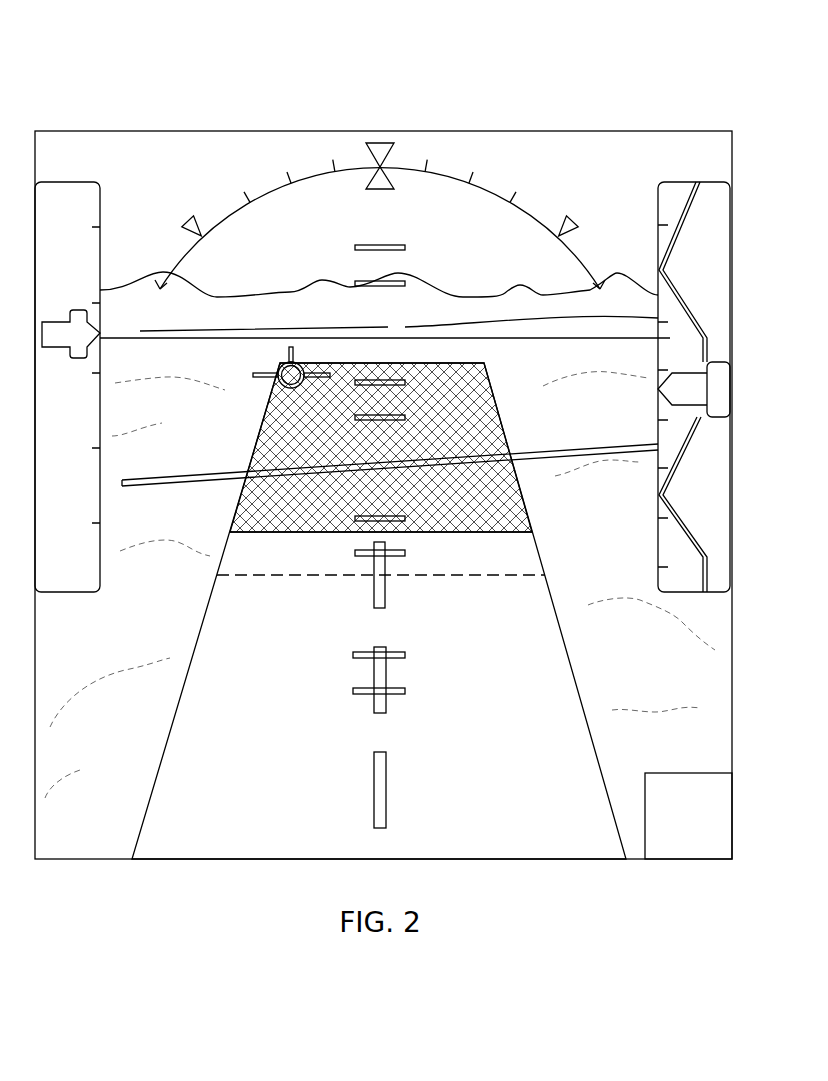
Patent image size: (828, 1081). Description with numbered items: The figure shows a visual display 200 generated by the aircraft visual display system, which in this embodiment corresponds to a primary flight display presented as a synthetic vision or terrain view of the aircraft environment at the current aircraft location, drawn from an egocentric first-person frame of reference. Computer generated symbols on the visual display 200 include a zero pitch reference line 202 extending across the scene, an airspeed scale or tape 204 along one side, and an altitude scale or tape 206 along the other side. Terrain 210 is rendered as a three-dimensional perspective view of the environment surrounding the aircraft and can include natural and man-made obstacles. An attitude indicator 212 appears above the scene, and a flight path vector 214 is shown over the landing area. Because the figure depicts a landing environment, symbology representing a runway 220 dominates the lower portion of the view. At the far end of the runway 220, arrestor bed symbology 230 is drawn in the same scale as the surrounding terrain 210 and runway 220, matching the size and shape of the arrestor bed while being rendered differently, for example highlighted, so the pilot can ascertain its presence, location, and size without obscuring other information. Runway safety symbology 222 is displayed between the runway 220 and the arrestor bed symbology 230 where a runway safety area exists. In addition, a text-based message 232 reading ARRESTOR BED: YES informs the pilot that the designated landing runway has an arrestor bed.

The visual display 200 is at (220, 86).
The zero pitch reference line 202 is at (212, 476).
The airspeed scale or tape 204 is at (68, 186).
The altitude scale or tape 206 is at (707, 186).
The terrain 210 is at (258, 284).
The attitude indicator 212 is at (488, 188).
The flight path vector 214 is at (287, 352).
The runway 220 is at (560, 648).
The runway safety symbology 222 is at (533, 555).
The arrestor bed symbology 230 is at (516, 512).
The text-based message 232 is at (689, 773).